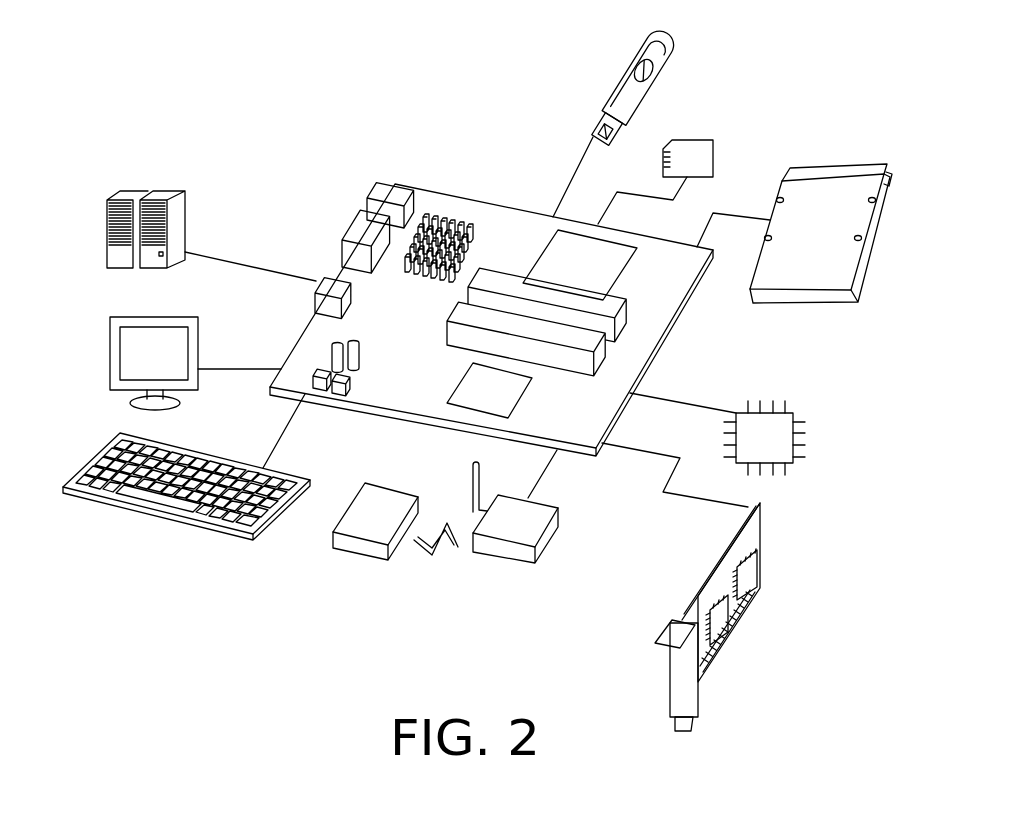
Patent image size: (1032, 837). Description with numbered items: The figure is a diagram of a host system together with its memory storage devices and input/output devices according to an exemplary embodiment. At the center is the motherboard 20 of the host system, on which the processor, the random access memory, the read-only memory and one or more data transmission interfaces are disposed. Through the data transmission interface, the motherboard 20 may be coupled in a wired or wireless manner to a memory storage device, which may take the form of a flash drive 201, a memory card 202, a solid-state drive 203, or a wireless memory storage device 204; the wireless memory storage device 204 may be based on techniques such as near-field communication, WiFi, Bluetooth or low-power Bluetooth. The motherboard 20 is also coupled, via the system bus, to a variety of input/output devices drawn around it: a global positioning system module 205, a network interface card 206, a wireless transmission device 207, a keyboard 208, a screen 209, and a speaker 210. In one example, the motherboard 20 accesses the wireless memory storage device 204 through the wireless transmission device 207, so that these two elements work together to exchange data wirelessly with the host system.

The motherboard 20 is at (493, 217).
The flash drive 201 is at (620, 75).
The memory card 202 is at (713, 148).
The solid-state drive 203 is at (835, 167).
The wireless memory storage device 204 is at (348, 498).
The global positioning system module 205 is at (797, 440).
The network interface card 206 is at (760, 562).
The wireless transmission device 207 is at (550, 545).
The keyboard 208 is at (187, 528).
The screen 209 is at (110, 372).
The speaker 210 is at (107, 252).